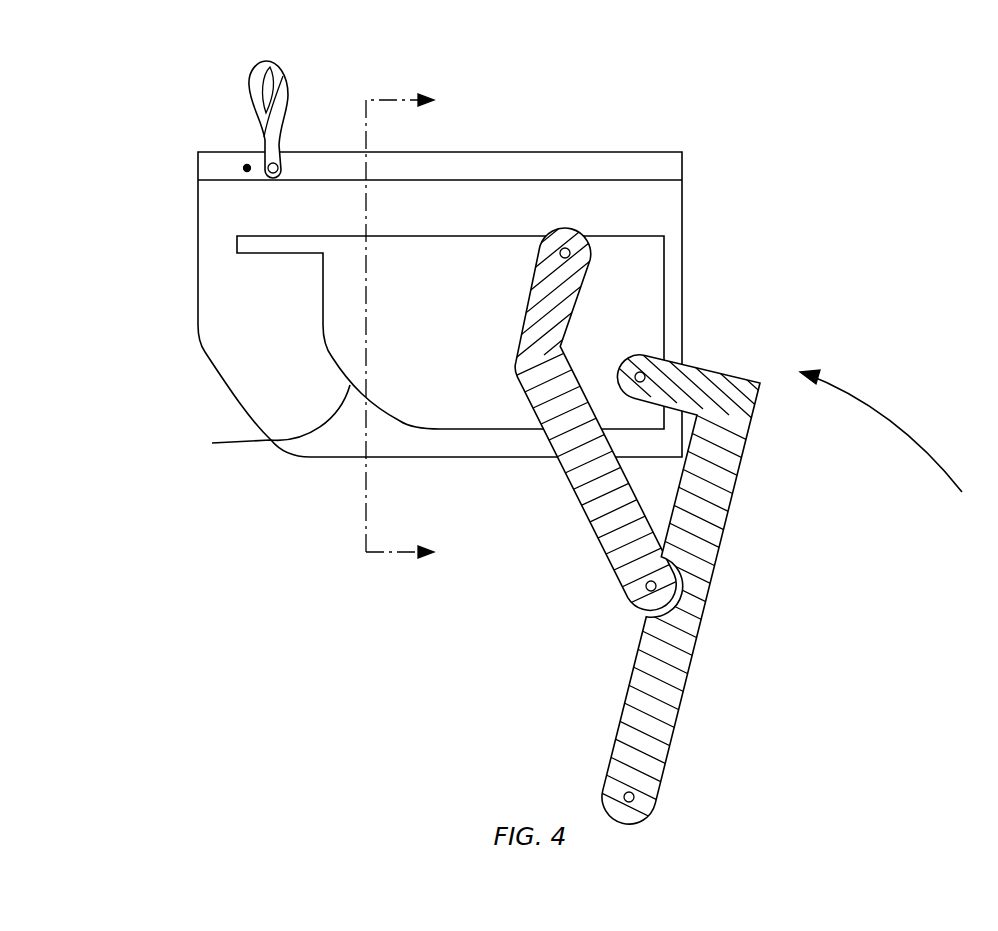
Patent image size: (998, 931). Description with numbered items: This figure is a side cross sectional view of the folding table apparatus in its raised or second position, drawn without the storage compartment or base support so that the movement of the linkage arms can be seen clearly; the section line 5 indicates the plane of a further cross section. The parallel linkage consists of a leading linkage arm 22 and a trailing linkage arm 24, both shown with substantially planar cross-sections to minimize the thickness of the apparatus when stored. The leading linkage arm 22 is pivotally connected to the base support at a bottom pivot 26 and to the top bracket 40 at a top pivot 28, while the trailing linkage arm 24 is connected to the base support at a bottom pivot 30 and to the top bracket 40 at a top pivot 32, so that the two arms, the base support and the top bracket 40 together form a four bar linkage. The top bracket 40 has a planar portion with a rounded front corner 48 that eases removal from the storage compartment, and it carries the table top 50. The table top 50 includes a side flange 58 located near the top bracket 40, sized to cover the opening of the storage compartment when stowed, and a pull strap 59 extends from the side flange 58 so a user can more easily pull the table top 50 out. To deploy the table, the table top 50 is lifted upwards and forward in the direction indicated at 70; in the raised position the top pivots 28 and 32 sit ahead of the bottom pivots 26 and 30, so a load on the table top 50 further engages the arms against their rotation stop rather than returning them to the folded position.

The section line 5- 5 is at (411, 327).
The leading linkage arm 22 is at (525, 290).
The trailing linkage arm 24 is at (708, 514).
The bottom pivot 26 is at (646, 587).
The top pivot 28 is at (563, 248).
The bottom pivot 30 is at (631, 793).
The top pivot 32 is at (648, 370).
The top bracket 40 is at (632, 298).
The rounded front corner 48 is at (212, 443).
The table top 50 is at (648, 152).
The side flange 58 is at (247, 165).
The pull strap 59 is at (289, 80).
The direction of table top movement 70 is at (862, 403).